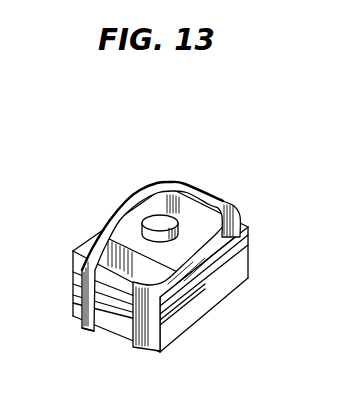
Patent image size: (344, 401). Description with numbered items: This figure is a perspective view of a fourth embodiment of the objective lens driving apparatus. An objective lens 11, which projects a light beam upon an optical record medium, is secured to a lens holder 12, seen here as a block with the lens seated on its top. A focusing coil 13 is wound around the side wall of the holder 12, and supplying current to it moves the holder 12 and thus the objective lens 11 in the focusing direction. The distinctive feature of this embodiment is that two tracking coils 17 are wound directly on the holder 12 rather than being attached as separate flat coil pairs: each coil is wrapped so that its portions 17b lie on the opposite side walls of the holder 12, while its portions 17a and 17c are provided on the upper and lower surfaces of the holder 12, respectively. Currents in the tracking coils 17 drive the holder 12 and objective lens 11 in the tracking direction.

The objective lens 11 is at (195, 188).
The lens holder 12 is at (176, 241).
The focusing coil 13 is at (195, 298).
The tracking coil 17 is at (155, 266).
The tracking coil portion 17a is at (105, 225).
The tracking coil portion 17b is at (90, 298).
The tracking coil portion 17c is at (99, 330).